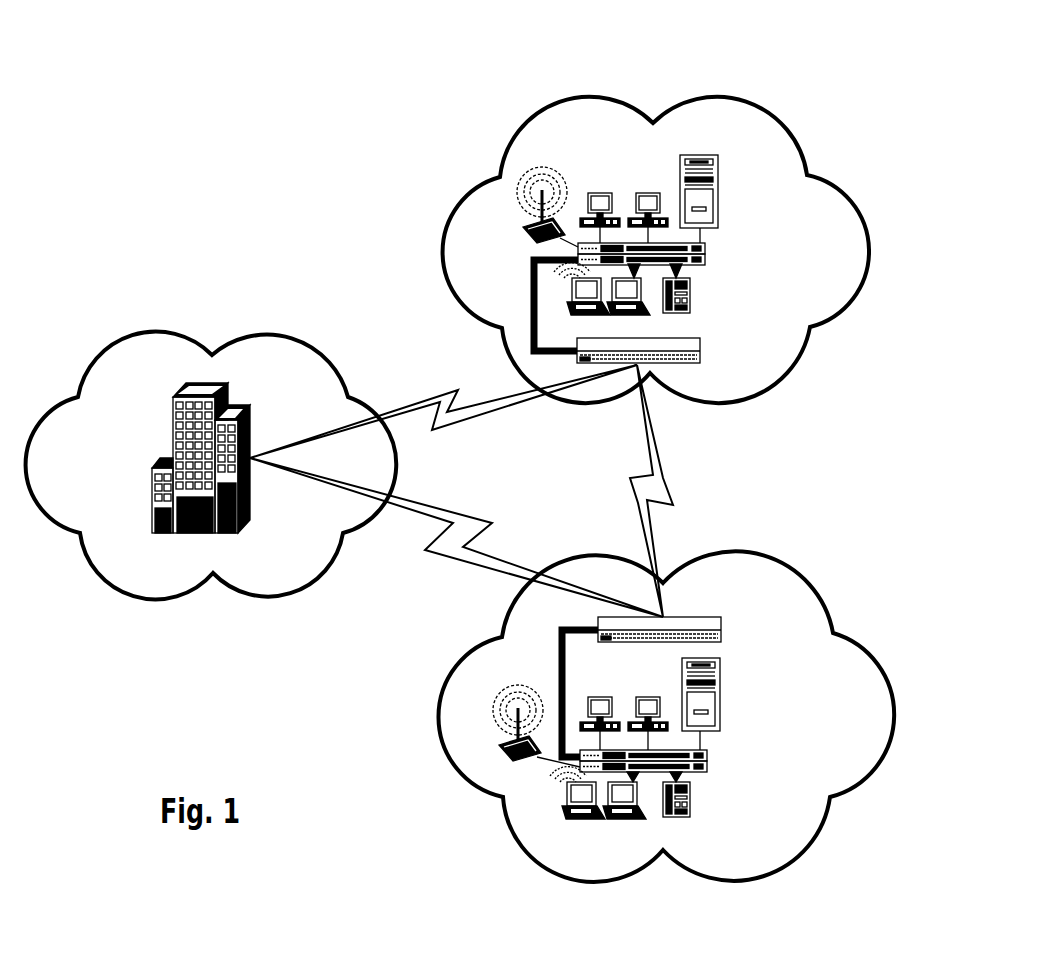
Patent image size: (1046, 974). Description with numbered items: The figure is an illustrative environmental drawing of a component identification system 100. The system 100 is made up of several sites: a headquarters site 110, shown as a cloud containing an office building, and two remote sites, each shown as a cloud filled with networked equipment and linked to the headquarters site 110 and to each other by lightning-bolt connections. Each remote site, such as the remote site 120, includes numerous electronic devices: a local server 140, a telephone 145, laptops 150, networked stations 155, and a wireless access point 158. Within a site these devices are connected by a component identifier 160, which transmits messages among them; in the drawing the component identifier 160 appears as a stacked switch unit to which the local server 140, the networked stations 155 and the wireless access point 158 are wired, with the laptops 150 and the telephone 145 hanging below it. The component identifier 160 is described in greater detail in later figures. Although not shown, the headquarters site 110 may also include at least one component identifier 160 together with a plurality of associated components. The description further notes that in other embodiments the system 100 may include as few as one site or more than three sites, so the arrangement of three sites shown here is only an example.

The component identification system 100 is at (895, 66).
The headquarters site 110 is at (228, 288).
The remote site 120 is at (814, 128).
The local server 140 is at (692, 187).
The telephone 145 is at (681, 337).
The laptops 150 is at (573, 307).
The networked stations 155 is at (623, 206).
The wireless access point 158 is at (547, 196).
The component identifier 160 is at (707, 750).